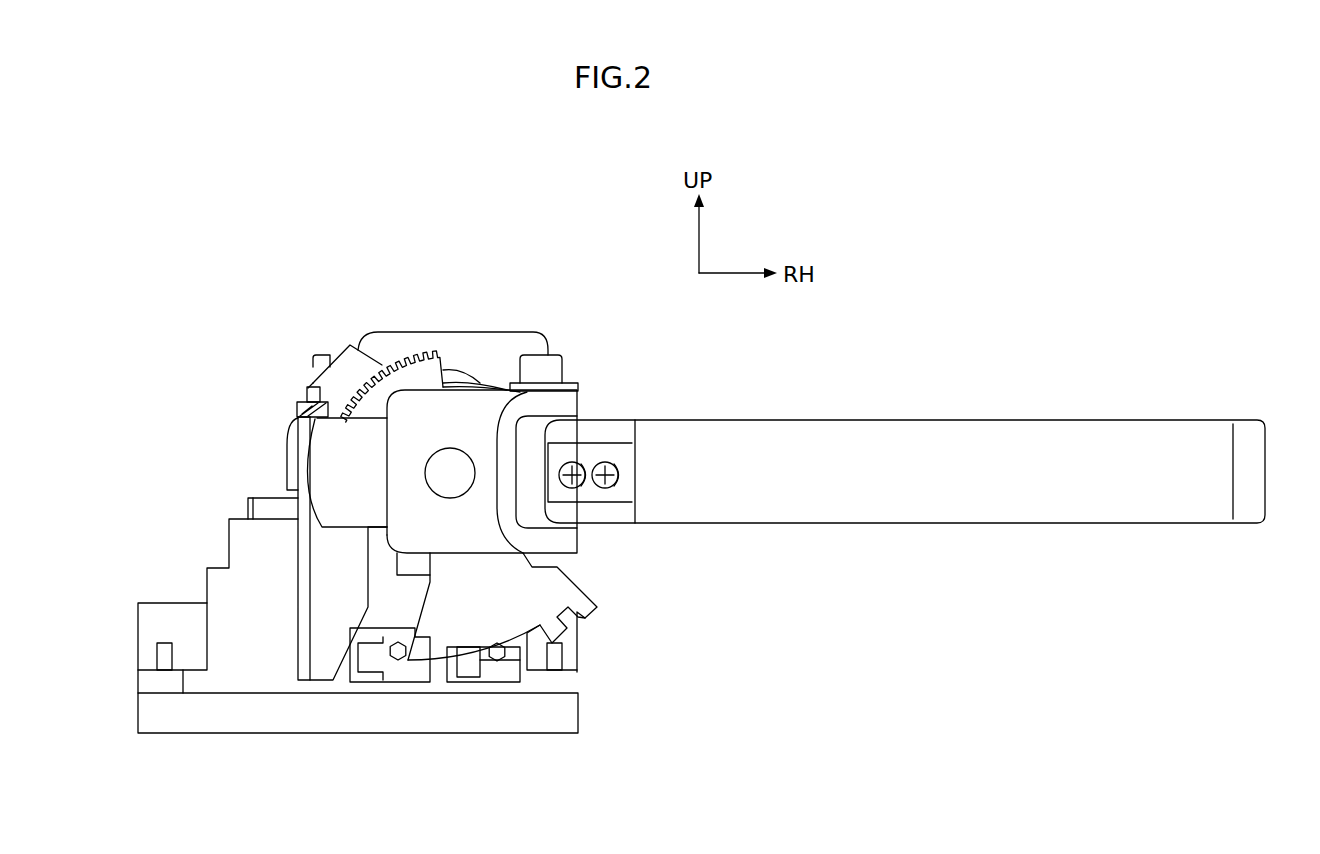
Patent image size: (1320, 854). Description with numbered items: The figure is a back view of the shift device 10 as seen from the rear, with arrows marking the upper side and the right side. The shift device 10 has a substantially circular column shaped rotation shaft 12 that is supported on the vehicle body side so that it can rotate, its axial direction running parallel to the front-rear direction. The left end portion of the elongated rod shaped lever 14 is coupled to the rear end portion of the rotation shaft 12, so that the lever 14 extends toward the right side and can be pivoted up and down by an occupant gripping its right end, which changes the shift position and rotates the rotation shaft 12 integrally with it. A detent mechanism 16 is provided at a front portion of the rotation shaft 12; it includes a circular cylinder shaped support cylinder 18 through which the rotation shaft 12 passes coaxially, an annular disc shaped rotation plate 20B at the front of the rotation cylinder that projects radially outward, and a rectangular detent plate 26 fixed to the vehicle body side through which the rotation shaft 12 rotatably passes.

The shift device 10 is at (240, 348).
The rotation shaft 12 is at (572, 555).
The lever 14 is at (906, 418).
The detent mechanism 16 is at (393, 326).
The support cylinder 18 is at (442, 383).
The rotation plate 20B is at (480, 383).
The detent plate 26 is at (551, 332).